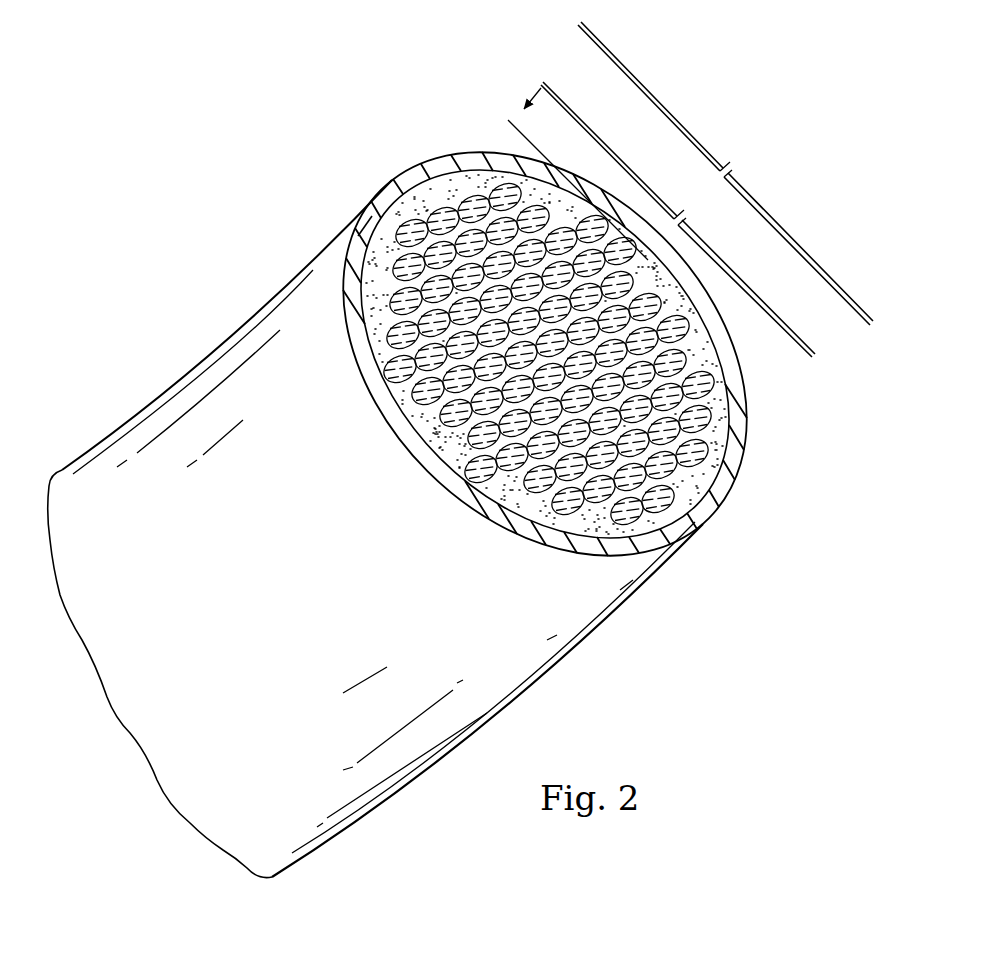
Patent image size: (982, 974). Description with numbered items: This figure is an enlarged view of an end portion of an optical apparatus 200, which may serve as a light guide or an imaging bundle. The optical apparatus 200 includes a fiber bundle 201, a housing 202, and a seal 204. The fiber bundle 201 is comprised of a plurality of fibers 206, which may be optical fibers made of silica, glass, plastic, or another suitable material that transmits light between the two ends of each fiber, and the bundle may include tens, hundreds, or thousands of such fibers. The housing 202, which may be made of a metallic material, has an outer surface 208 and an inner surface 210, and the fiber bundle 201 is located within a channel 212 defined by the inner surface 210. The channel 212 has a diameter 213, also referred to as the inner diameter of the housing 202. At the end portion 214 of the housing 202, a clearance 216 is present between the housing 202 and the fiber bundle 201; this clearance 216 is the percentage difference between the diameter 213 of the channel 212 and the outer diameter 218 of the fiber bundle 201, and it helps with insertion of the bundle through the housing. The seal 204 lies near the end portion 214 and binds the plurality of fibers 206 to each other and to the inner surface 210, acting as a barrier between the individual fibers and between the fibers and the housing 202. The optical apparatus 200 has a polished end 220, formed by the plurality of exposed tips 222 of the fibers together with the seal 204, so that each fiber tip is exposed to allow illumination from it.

The optical apparatus 200 is at (302, 147).
The fiber bundle 201 is at (443, 186).
The housing 202 is at (270, 291).
The seal 204 is at (556, 514).
The plurality of fibers 206 is at (396, 237).
The outer surface 208 is at (195, 373).
The inner surface 210 is at (688, 510).
The channel 212 is at (412, 190).
The diameter 213 is at (725, 173).
The end portion 214 is at (769, 438).
The clearance 216 is at (506, 127).
The outer diameter 218 is at (678, 219).
The polished end 220 is at (703, 473).
The exposed tips 222 is at (448, 438).